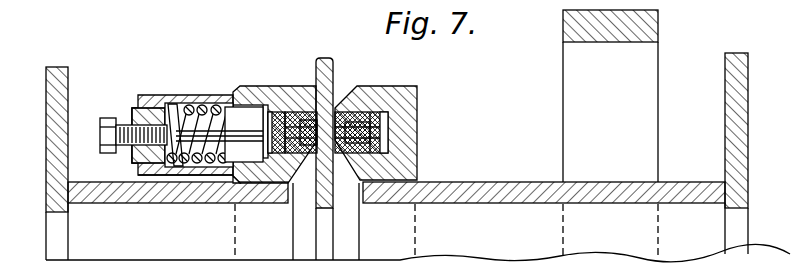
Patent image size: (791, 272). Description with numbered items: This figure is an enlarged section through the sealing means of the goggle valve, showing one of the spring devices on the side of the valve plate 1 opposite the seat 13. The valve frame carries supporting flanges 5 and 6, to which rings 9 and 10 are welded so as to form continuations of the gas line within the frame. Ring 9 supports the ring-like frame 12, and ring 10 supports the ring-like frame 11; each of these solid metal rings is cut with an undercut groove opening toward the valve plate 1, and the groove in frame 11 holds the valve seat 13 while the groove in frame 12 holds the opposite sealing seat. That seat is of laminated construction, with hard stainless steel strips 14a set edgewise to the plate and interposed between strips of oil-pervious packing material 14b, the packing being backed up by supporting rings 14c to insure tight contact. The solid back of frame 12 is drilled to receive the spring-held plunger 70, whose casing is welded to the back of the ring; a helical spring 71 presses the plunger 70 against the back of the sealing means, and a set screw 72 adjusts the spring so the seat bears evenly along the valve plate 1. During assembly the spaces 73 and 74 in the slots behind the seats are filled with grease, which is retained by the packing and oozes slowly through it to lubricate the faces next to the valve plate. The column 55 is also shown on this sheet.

The valve plate 1 is at (333, 68).
The supporting flange 5 is at (50, 142).
The supporting flange 6 is at (748, 118).
The ring 9 is at (147, 199).
The ring 10 is at (530, 198).
The ring-like frame 11 is at (451, 168).
The ring-like frame 12 is at (230, 187).
The valve seat 13 is at (377, 118).
The metal strips 14a is at (312, 114).
The packing strips 14b is at (306, 113).
The supporting rings 14c is at (282, 113).
The column 55 is at (650, 23).
The spring-held plunger 70 is at (237, 118).
The helical spring 71 is at (188, 107).
The set screw 72 is at (127, 116).
The space 73 is at (388, 128).
The space 74 is at (260, 185).